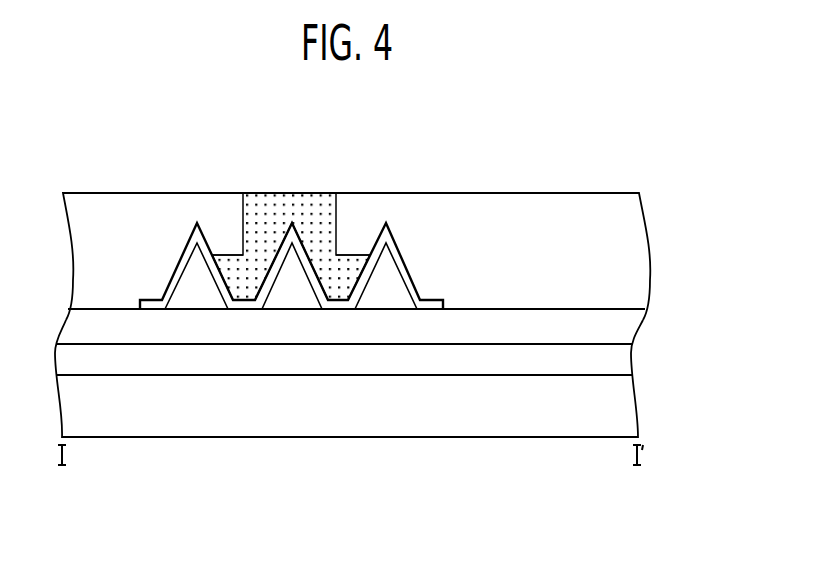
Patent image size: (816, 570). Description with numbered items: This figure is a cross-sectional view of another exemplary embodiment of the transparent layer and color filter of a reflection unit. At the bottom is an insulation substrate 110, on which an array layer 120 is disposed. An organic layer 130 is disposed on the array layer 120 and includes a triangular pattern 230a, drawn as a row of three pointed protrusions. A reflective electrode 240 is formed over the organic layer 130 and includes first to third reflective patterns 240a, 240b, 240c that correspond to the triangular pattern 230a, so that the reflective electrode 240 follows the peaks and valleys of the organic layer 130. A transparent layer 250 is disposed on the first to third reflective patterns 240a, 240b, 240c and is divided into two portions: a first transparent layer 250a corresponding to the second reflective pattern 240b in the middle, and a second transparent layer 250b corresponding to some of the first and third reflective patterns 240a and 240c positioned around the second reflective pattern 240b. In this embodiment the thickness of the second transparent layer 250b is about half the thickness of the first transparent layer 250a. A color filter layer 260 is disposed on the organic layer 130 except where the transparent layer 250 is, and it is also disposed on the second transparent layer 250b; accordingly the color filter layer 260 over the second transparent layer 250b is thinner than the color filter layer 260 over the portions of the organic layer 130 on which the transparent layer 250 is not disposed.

The insulation substrate 110 is at (634, 414).
The array layer 120 is at (626, 362).
The organic layer 130 is at (632, 328).
The reflective electrode 240 is at (277, 394).
The first reflective pattern 240a is at (175, 287).
The second reflective pattern 240b is at (267, 287).
The third reflective pattern 240c is at (362, 287).
The triangular pattern 230a is at (379, 284).
The transparent layer 250 is at (281, 192).
The first transparent layer 250a is at (288, 207).
The second transparent layer 250b is at (237, 273).
The color filter layer 260 is at (632, 241).